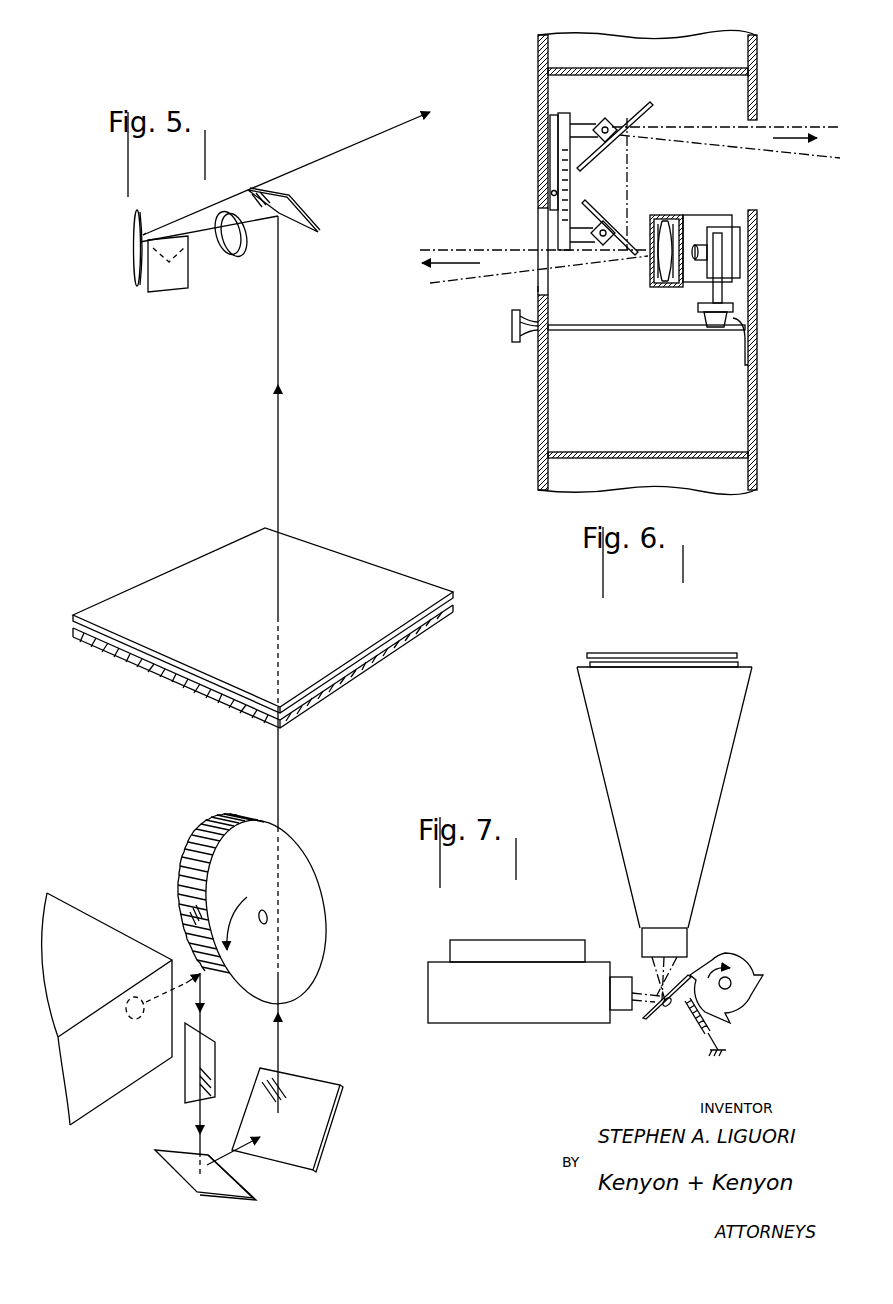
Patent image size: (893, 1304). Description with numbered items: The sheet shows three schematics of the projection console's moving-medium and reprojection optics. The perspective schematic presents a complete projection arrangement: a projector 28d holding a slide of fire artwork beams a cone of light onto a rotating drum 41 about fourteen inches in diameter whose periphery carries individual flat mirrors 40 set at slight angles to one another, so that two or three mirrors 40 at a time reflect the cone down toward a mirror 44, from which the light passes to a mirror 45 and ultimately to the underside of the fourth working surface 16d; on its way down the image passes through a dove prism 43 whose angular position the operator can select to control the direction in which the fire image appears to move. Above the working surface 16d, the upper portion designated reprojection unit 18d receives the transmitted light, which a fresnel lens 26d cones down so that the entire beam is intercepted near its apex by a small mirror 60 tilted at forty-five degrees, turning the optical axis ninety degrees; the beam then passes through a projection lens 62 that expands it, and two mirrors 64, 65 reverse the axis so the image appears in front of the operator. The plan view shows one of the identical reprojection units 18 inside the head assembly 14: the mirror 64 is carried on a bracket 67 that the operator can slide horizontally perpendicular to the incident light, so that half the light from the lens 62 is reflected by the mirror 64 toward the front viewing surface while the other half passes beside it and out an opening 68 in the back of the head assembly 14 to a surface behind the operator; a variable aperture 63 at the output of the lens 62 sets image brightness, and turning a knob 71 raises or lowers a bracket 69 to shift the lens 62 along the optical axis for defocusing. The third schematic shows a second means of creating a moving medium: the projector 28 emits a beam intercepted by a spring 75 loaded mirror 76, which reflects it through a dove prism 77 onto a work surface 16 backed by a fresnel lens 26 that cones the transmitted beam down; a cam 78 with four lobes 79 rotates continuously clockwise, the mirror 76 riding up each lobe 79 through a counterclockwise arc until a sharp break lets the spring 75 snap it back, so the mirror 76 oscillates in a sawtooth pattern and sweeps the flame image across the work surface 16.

In FIG. 6, the head assembly 14 is at (538, 98).
In FIG. 6, the reprojection unit 18 is at (728, 92).
In FIG. 7, the work surface 16 is at (653, 653).
In FIG. 7, the fresnel lens 26 is at (615, 670).
In FIG. 7, the projector 28 is at (510, 1017).
In FIG. 5, the fourth working surface 16d is at (173, 577).
In FIG. 5, the fresnel lens 26d is at (182, 675).
In FIG. 5, the reprojection unit 18d is at (130, 325).
In FIG. 5, the projector 28d is at (97, 1093).
In FIG. 5, the mirror 40 is at (221, 862).
In FIG. 5, the drum 41 is at (305, 902).
In FIG. 5, the dove prism 43 is at (210, 1065).
In FIG. 5, the mirror 44 is at (178, 1166).
In FIG. 5, the mirror 45 is at (317, 1153).
In FIG. 5, the mirror 60 is at (312, 232).
In FIG. 6, the mirror 60 is at (698, 217).
In FIG. 5, the projection lens 62 is at (234, 258).
In FIG. 6, the projection lens 62 is at (660, 288).
In FIG. 6, the variable aperture 63 is at (650, 252).
In FIG. 5, the mirror 64 is at (176, 284).
In FIG. 6, the mirror 64 is at (604, 211).
In FIG. 5, the mirror 65 is at (134, 256).
In FIG. 6, the mirror 65 is at (652, 106).
In FIG. 6, the bracket 67 is at (563, 162).
In FIG. 6, the opening 68 is at (548, 290).
In FIG. 6, the bracket 69 is at (722, 295).
In FIG. 6, the knob 71 is at (510, 342).
In FIG. 7, the spring 75 is at (697, 1027).
In FIG. 7, the mirror 76 is at (643, 1018).
In FIG. 7, the dove prism 77 is at (683, 945).
In FIG. 7, the cam 78 is at (738, 993).
In FIG. 7, the lobe 79 is at (737, 950).